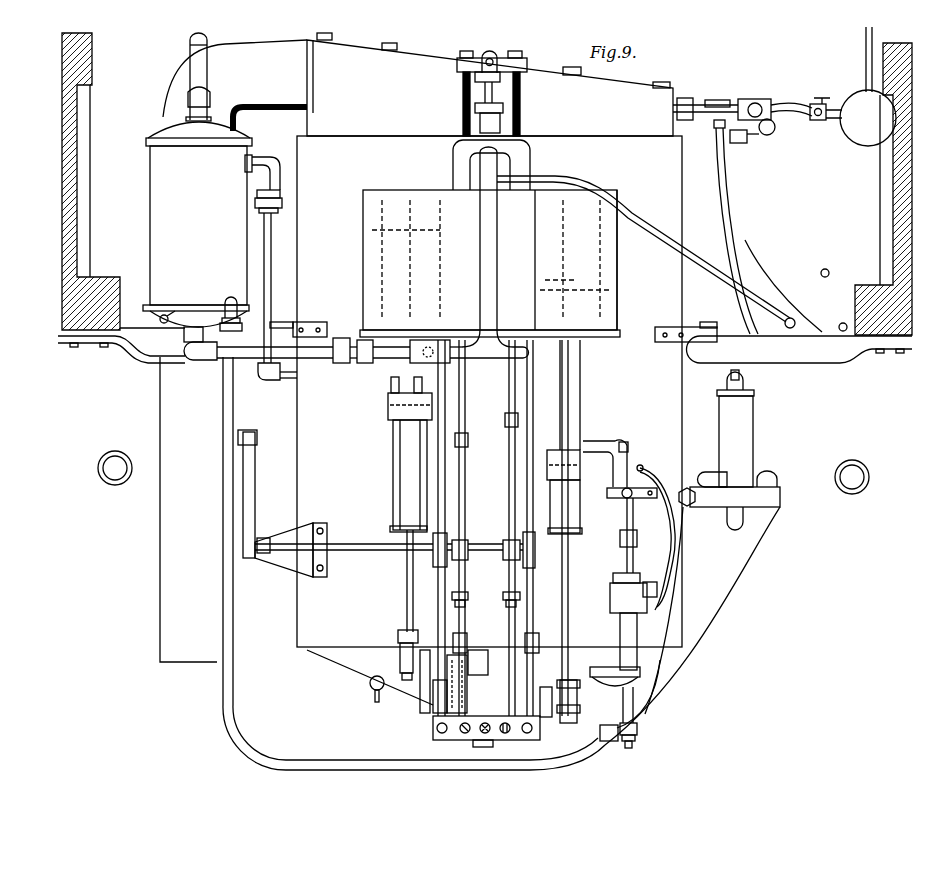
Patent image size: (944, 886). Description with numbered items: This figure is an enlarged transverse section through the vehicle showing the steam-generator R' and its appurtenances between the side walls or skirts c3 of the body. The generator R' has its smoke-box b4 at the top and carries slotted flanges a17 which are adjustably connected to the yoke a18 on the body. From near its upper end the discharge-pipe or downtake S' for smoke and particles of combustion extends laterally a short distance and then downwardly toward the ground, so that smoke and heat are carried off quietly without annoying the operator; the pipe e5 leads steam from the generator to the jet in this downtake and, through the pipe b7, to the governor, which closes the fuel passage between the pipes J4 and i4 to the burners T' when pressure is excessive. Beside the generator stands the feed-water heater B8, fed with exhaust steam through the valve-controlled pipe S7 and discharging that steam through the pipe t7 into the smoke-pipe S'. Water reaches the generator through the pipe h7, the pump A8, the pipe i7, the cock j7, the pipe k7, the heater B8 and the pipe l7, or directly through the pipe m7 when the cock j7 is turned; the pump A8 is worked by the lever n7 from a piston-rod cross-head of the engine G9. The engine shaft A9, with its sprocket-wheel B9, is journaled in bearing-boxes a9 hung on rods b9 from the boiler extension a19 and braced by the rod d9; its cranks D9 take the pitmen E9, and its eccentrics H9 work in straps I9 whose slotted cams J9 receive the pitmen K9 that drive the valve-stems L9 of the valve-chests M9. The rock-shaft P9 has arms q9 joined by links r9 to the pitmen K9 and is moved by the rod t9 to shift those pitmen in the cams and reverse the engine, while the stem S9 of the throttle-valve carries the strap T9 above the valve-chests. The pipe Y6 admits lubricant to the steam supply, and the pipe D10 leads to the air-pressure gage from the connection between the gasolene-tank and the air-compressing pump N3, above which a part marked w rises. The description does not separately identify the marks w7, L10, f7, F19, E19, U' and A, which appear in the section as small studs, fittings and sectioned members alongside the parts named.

The side walls or skirts c3 is at (92, 190).
The yoke a18 is at (157, 346).
The discharge-pipe S' is at (416, 347).
The steam-generator R' is at (489, 391).
The pipe t7 is at (195, 68).
The feed-water heater B8 is at (197, 232).
The pipe l7 is at (265, 287).
The slotted flanges a17 is at (308, 322).
The valve-controlled pipe S7 is at (227, 352).
The valve-chests M9 is at (460, 270).
The engine G9 is at (588, 260).
The boiler extension a19 is at (610, 263).
The pipe Y6 is at (650, 220).
The stud w7 is at (792, 317).
The pipe D10 is at (822, 270).
The stud L10 is at (841, 323).
The stem S9 is at (500, 92).
The strap T9 is at (482, 85).
The smoke-box b4 is at (473, 67).
The pipe e5 is at (763, 104).
The air-compressing pump N3 is at (860, 140).
The pipe w is at (866, 58).
The pipe b7 is at (731, 214).
The pump A8 is at (614, 628).
The pipe J4 is at (700, 472).
The pipe f7 is at (683, 573).
The pipe i4 is at (740, 567).
The pipe m7 is at (655, 686).
The pipe k7 is at (228, 474).
The rod t9 is at (248, 430).
The rock-shaft P9 is at (362, 550).
The valve F19 is at (395, 374).
The valve stem E19 is at (405, 603).
The pitmen E9 is at (568, 613).
The rods b9 is at (526, 388).
The pitmen K9 is at (508, 498).
The valve-stems L9 is at (508, 410).
The arms q9 is at (512, 578).
The links r9 is at (470, 598).
The slotted cams J9 is at (460, 633).
The eccentrics H9 is at (472, 650).
The straps I9 is at (450, 740).
The bearing-boxes a9 is at (434, 710).
The cranks D9 is at (425, 690).
The shaft A9 is at (546, 687).
The sprocket-wheel B9 is at (470, 716).
The rod d9 is at (483, 748).
The burners T' is at (356, 693).
The cock j7 is at (597, 735).
The pipe i7 is at (617, 740).
The fitting U' is at (624, 680).
The pipe h7 is at (641, 465).
The lever n7 is at (625, 497).
The ring A is at (119, 483).